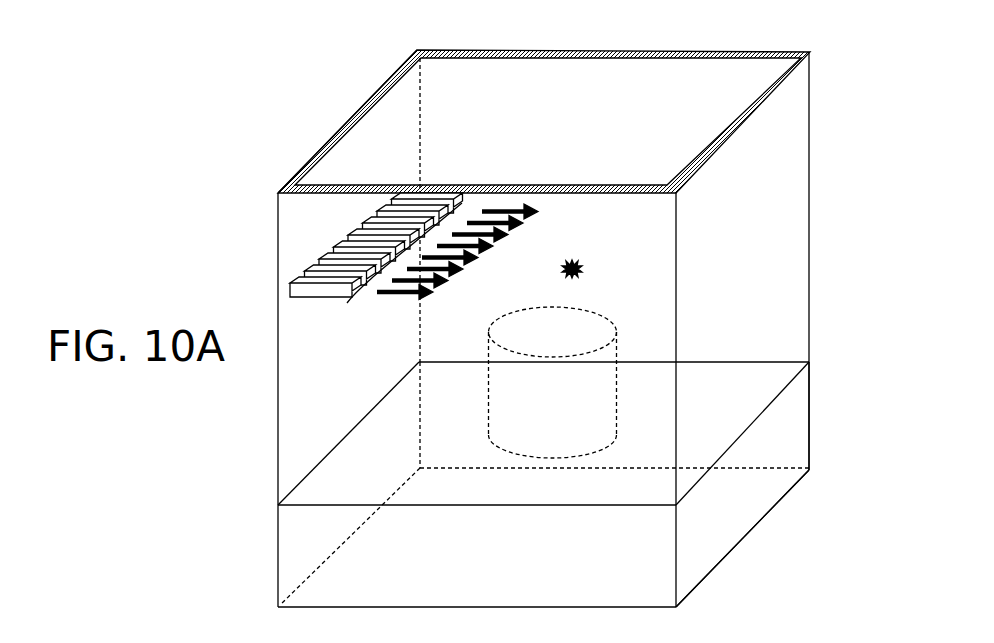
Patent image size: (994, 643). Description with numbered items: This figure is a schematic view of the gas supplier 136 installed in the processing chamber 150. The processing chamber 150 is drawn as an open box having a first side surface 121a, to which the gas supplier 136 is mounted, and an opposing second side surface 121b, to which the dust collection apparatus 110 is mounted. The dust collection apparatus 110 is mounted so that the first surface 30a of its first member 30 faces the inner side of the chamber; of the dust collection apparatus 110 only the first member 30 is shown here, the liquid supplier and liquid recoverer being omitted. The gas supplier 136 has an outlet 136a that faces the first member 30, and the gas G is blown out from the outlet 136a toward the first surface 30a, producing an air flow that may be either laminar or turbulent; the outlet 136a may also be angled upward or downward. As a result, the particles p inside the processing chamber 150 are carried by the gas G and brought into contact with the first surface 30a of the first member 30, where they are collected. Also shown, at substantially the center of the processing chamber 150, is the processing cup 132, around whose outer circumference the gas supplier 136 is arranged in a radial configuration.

The dust collection apparatus 110 is at (747, 107).
The processing chamber 150 is at (560, 51).
The first side surface 121a is at (347, 120).
The second side surface 121b is at (720, 408).
The gas supplier 136 is at (320, 240).
The outlet 136a is at (405, 268).
The gas G is at (437, 306).
The particles p is at (583, 263).
The processing cup 132 is at (582, 310).
The first member 30 is at (747, 225).
The first surface 30a is at (717, 245).